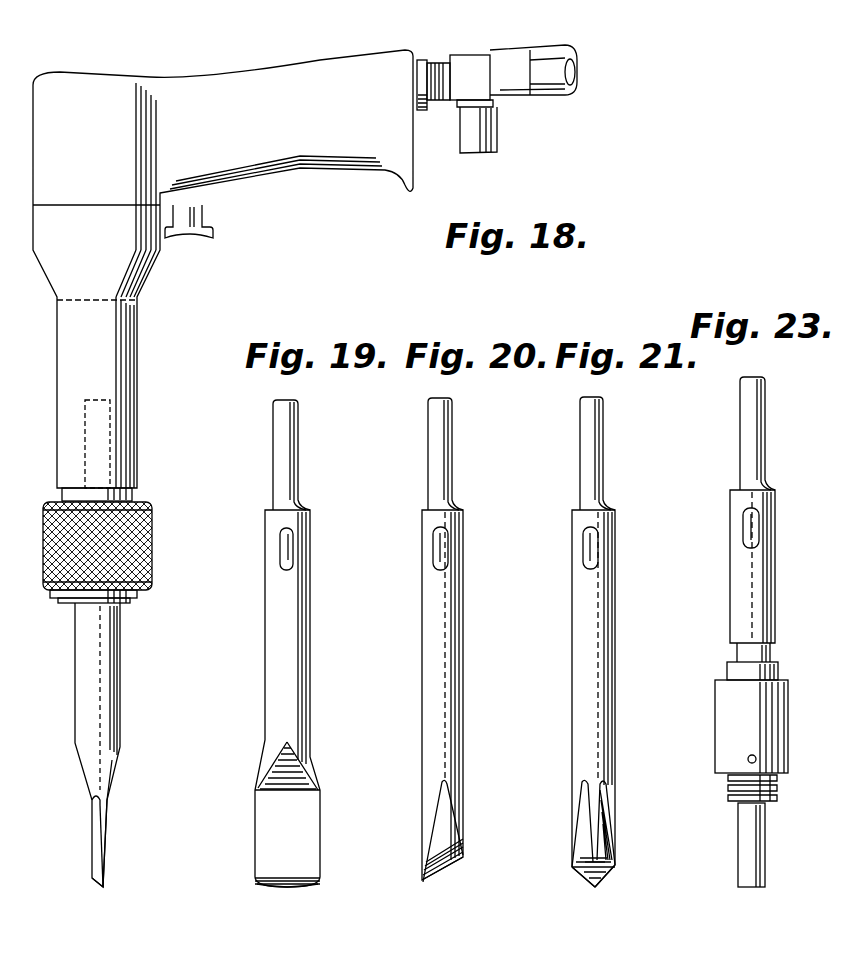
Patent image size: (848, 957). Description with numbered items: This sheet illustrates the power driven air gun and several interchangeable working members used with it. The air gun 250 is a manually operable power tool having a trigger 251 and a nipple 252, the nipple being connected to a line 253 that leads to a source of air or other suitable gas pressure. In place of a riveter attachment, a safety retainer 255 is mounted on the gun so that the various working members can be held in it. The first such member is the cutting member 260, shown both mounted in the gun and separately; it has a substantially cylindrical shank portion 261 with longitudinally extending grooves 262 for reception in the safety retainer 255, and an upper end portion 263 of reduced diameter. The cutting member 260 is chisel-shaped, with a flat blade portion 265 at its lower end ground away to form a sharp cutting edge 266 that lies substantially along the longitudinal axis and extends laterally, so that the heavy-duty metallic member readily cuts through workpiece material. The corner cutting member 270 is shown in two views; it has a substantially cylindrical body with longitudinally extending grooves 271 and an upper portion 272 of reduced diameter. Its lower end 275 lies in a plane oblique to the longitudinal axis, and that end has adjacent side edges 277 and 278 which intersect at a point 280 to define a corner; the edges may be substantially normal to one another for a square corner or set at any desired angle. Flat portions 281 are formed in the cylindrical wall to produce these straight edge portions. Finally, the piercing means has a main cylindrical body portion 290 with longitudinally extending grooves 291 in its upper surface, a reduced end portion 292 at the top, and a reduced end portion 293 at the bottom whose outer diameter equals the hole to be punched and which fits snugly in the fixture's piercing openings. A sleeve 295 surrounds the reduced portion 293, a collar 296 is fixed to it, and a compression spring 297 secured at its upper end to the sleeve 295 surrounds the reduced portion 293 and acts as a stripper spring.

In FIG. 18, the air gun 250 is at (262, 192).
In FIG. 18, the trigger 251 is at (190, 238).
In FIG. 18, the nipple 252 is at (478, 55).
In FIG. 18, the line 253 is at (558, 92).
In FIG. 18, the safety retainer 255 is at (152, 524).
In FIG. 18, the cutting member 260 is at (126, 692).
In FIG. 19, the cutting member 260 is at (315, 689).
In FIG. 19, the shank portion 261 is at (265, 617).
In FIG. 19, the longitudinally extending grooves 262 is at (289, 553).
In FIG. 19, the upper end portion 263 is at (298, 468).
In FIG. 18, the flat blade portion 265 is at (105, 828).
In FIG. 19, the flat blade portion 265 is at (320, 857).
In FIG. 18, the cutting edge 266 is at (103, 890).
In FIG. 19, the cutting edge 266 is at (285, 888).
In FIG. 20, the corner cutting member 270 is at (468, 678).
In FIG. 21, the corner cutting member 270 is at (620, 622).
In FIG. 20, the longitudinally extending grooves 271 is at (441, 553).
In FIG. 21, the longitudinally extending grooves 271 is at (598, 538).
In FIG. 20, the upper portion 272 is at (452, 469).
In FIG. 21, the upper portion 272 is at (603, 450).
In FIG. 20, the lower end 275 is at (440, 878).
In FIG. 21, the lower end 275 is at (600, 877).
In FIG. 21, the side edge 277 is at (578, 876).
In FIG. 21, the side edge 278 is at (612, 868).
In FIG. 21, the point 280 is at (594, 888).
In FIG. 20, the flat portions 281 is at (448, 828).
In FIG. 21, the flat portions 281 is at (578, 816).
In FIG. 23, the main cylindrical body portion 290 is at (730, 586).
In FIG. 23, the longitudinally extending grooves 291 is at (746, 526).
In FIG. 23, the reduced end portion 292 is at (748, 425).
In FIG. 23, the reduced end portion 293 is at (738, 845).
In FIG. 23, the sleeve 295 is at (715, 725).
In FIG. 23, the collar 296 is at (727, 672).
In FIG. 23, the compression spring 297 is at (730, 796).